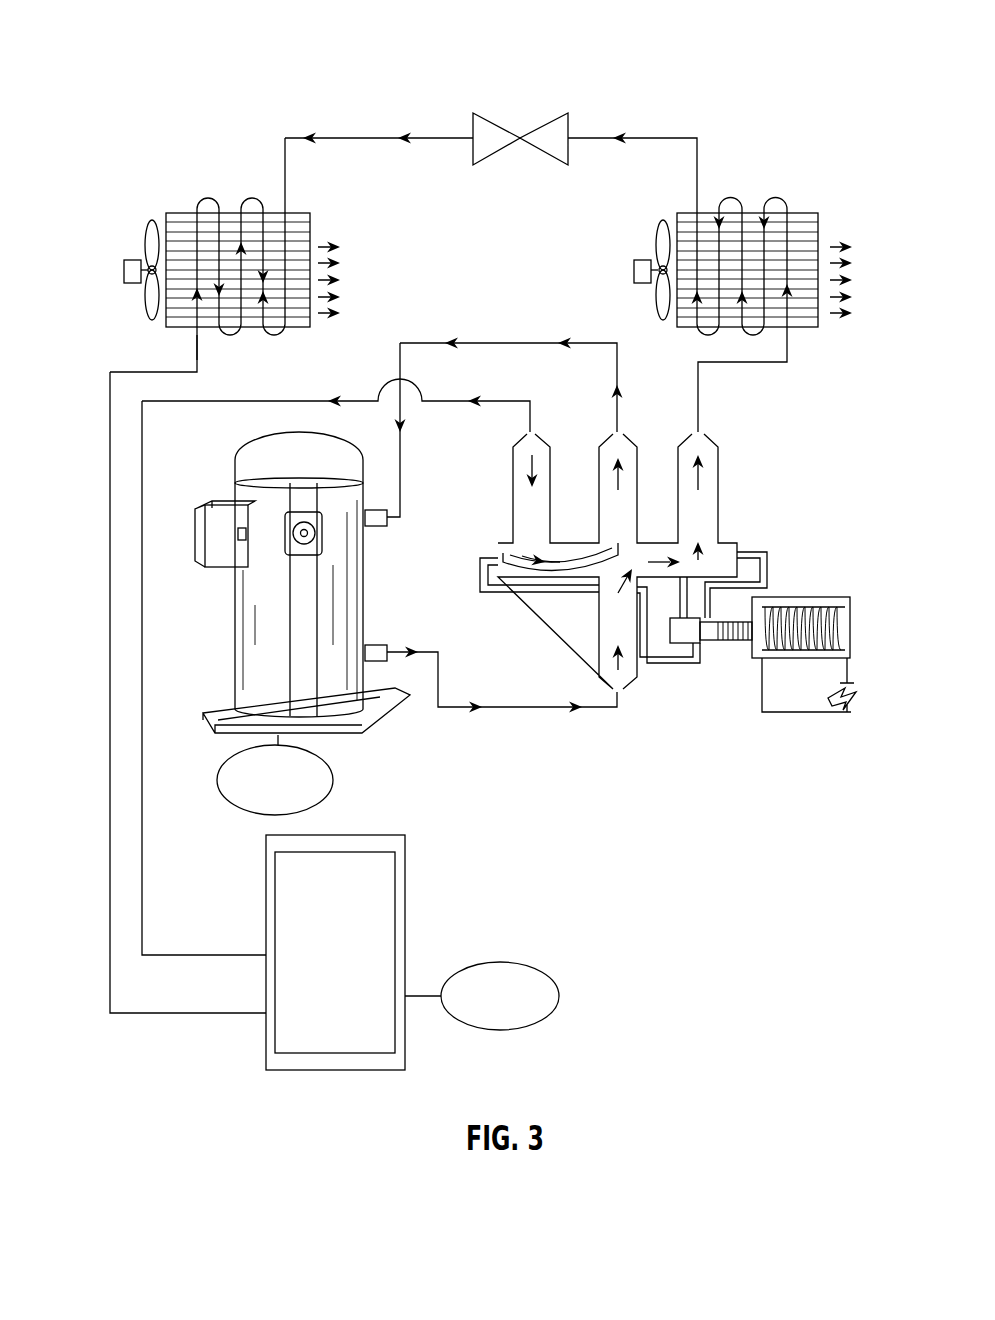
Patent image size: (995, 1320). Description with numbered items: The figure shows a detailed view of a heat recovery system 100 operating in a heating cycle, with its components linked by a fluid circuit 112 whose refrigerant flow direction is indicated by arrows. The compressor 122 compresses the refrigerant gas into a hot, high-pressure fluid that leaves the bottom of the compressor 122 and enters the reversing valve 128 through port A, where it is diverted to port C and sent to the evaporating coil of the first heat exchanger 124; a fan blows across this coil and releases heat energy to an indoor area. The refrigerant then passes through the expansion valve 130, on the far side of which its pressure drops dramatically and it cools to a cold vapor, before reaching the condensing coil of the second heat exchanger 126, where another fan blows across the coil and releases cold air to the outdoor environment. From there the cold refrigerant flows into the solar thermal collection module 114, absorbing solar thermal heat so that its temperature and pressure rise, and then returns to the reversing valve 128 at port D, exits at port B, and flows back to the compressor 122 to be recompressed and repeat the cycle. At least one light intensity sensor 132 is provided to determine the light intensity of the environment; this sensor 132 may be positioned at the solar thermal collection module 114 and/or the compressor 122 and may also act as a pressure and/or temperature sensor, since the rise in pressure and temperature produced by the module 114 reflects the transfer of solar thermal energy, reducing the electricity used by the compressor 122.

The heat recovery system 100 is at (735, 68).
The fluid circuit 112 is at (110, 520).
The solar thermal collection module 114 is at (390, 907).
The compressor 122 is at (370, 718).
The first heat exchanger 124 is at (805, 212).
The second heat exchanger 126 is at (233, 210).
The reversing valve 128 is at (720, 505).
The expansion valve 130 is at (545, 122).
The light intensity sensor 132 is at (335, 782).